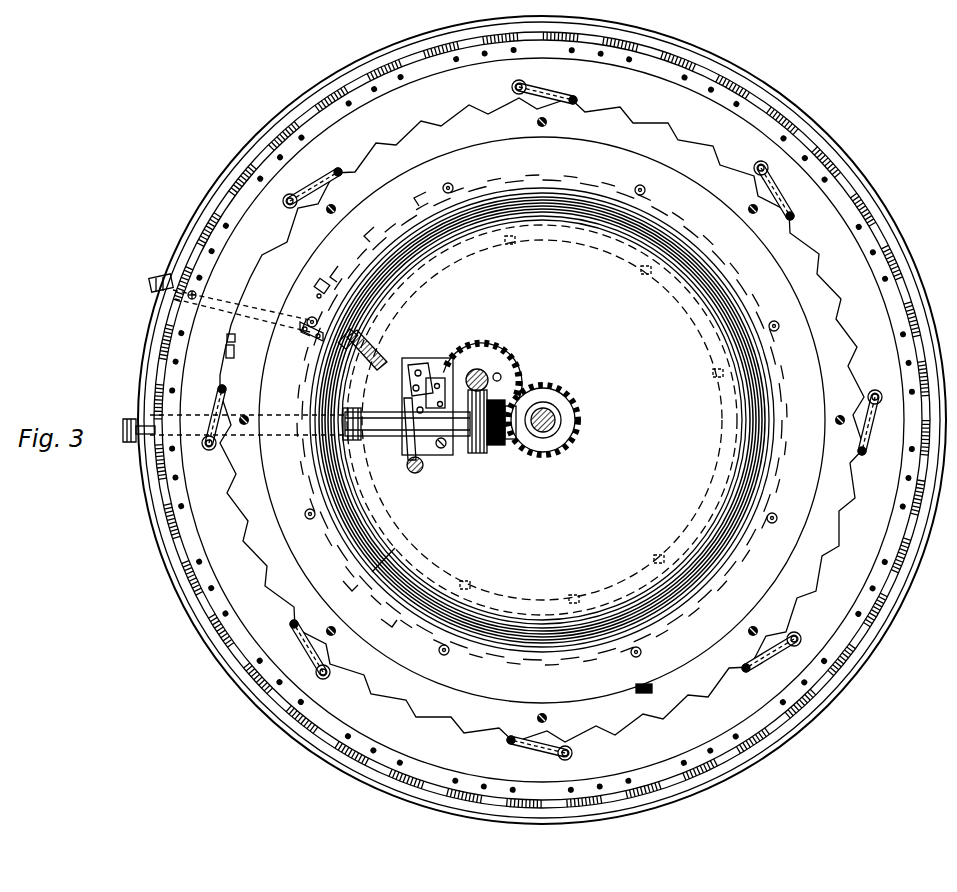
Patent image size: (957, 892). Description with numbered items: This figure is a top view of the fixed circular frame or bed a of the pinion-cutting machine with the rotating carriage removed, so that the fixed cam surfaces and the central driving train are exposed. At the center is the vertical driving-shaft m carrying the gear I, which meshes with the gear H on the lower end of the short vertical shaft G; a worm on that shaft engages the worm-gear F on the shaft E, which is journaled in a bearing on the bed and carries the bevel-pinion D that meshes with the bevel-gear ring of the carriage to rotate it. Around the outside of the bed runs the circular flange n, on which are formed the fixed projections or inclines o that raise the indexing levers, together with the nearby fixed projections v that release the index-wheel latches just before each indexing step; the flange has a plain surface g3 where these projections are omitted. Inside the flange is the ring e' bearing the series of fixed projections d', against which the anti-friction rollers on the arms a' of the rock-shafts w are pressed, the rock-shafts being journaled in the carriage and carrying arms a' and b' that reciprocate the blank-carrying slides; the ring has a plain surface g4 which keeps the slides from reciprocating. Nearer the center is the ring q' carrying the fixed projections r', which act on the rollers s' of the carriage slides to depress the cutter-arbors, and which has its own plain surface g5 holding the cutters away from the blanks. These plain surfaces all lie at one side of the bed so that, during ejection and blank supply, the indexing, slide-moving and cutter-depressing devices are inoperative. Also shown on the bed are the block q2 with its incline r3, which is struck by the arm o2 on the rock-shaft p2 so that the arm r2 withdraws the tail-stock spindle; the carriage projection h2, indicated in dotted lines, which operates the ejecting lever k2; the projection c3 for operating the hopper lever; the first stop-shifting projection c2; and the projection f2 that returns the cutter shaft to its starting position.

The circular flange n is at (165, 522).
The fixed projection v is at (283, 155).
The fixed projection o is at (316, 118).
The circular frame or bed a is at (542, 420).
The fixed projection d' is at (531, 418).
The ring e' is at (542, 420).
The arm b' is at (540, 408).
The rock-shaft w is at (284, 203).
The arm a' is at (542, 409).
The anti-friction roller s' is at (544, 417).
The fixed projection r' is at (533, 420).
The plain surface g5 is at (318, 400).
The projection h2 is at (542, 420).
The lever k2 is at (568, 587).
The ring q' is at (404, 544).
The projection c3 is at (318, 285).
The fixed projection c2 is at (648, 684).
The plain surface g3 is at (165, 357).
The plain surface g4 is at (226, 352).
The projection f2 is at (236, 340).
The shaft E is at (395, 420).
The bevel-pinion D is at (402, 410).
The incline r3 is at (430, 370).
The arm o2 is at (417, 408).
The arm r2 is at (404, 436).
The rock-shaft p2 is at (422, 468).
The block q2 is at (421, 368).
The worm-gear F is at (478, 455).
The short vertical shaft G is at (500, 372).
The gear H is at (501, 379).
The gear I is at (565, 400).
The vertical driving-shaft m is at (561, 420).